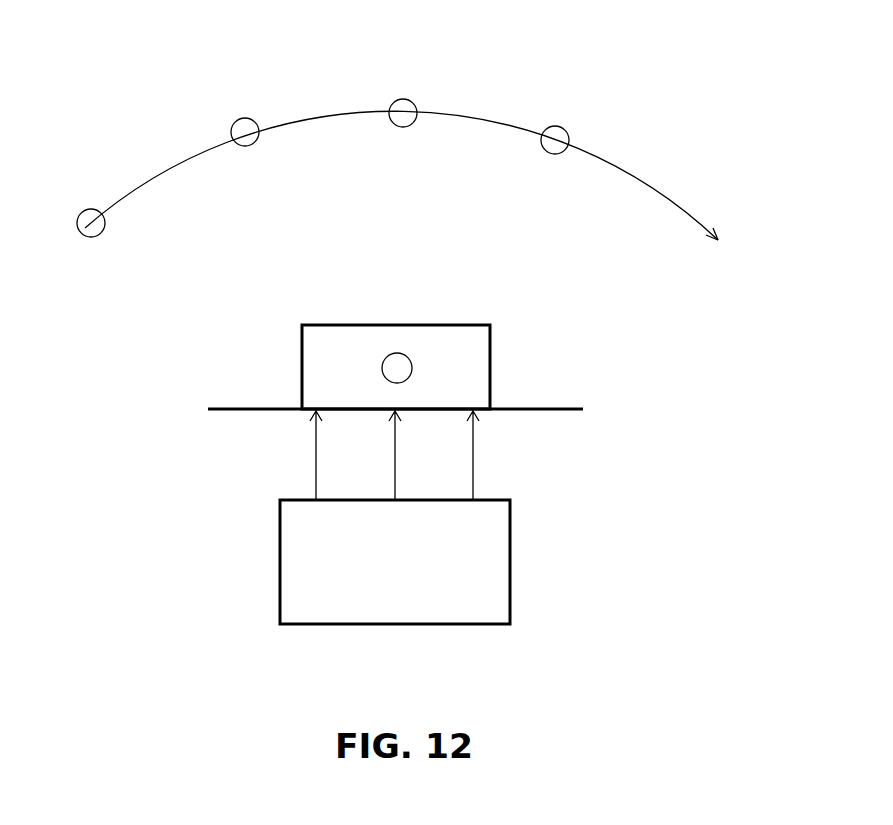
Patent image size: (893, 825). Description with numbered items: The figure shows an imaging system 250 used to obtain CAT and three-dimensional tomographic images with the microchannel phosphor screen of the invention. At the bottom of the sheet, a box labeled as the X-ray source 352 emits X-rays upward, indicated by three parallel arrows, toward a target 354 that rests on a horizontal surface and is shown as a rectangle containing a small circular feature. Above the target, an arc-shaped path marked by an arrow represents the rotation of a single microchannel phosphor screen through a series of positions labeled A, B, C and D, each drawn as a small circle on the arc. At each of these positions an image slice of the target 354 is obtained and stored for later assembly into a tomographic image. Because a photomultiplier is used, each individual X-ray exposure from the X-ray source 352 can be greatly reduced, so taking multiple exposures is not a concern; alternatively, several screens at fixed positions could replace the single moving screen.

The imaging system 250 is at (233, 90).
The x-ray source 352 is at (493, 570).
The object with feature 354 is at (475, 367).